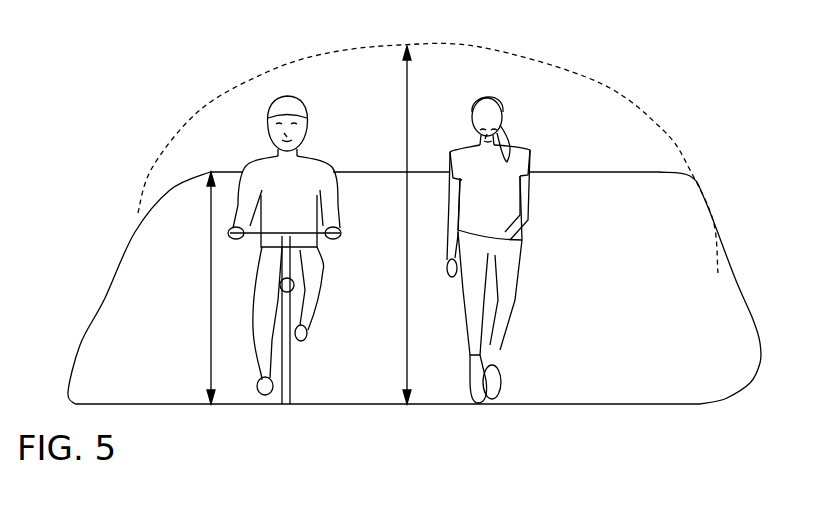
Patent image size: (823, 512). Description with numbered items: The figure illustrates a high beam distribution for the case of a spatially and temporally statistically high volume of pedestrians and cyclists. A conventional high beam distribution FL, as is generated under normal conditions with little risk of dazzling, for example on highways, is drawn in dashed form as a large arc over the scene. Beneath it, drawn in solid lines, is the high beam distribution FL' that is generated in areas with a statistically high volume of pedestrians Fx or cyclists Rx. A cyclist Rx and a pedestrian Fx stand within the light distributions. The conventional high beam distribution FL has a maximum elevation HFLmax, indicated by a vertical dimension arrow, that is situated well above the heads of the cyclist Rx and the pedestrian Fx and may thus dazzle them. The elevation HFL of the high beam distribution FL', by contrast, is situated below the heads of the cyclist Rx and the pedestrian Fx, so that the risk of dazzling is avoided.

The conventional high beam distribution FL is at (428, 142).
The high beam distribution FL' is at (398, 288).
The elevation HFL is at (211, 303).
The maximum elevation HFLmax is at (407, 95).
The cyclist Rx is at (253, 157).
The pedestrian Fx is at (523, 150).